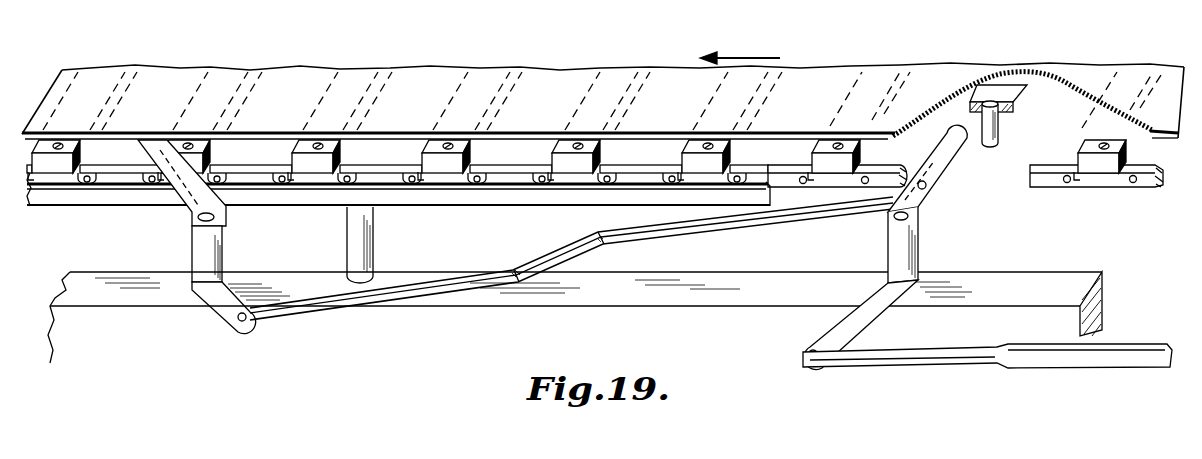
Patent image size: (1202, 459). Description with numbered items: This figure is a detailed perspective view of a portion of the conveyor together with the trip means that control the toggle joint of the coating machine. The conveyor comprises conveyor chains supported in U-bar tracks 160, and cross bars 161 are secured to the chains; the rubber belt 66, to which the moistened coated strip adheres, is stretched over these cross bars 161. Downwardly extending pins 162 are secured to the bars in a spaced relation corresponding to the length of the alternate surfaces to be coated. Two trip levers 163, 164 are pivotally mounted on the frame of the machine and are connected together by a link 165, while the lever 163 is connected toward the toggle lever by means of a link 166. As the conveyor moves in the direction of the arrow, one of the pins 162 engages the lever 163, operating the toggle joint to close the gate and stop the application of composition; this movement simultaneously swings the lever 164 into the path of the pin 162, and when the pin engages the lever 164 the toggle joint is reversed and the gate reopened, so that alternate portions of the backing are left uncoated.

The rubber belt 66 is at (550, 118).
The U-bar tracks 160 is at (558, 200).
The cross bars 161 is at (980, 95).
The downwardly extending pins 162 is at (998, 133).
The trip lever 163 is at (960, 155).
The trip lever 164 is at (230, 212).
The link 165 is at (722, 232).
The link 166 is at (1138, 363).